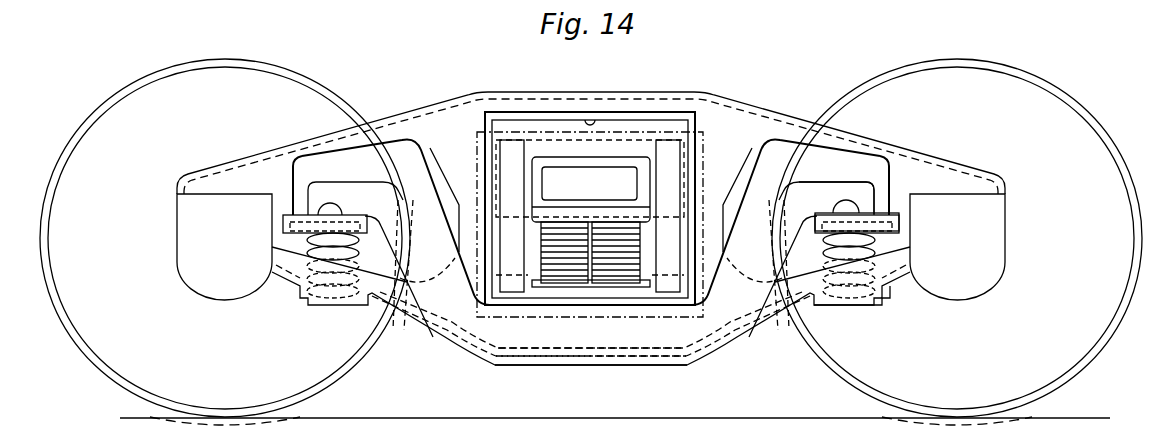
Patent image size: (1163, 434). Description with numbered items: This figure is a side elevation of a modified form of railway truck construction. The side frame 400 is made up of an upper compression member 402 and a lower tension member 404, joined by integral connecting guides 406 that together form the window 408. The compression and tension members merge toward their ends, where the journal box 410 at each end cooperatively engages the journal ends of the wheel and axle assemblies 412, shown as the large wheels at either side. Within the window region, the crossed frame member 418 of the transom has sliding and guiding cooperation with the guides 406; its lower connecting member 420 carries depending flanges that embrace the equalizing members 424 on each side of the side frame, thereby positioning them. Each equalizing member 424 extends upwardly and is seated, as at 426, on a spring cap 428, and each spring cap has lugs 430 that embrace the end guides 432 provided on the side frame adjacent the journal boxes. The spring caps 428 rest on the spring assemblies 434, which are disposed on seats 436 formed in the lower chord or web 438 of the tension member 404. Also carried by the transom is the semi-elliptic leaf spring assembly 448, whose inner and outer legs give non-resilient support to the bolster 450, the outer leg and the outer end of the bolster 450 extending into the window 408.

The side frame 400 is at (412, 120).
The compression member 402 is at (468, 103).
The tension member 404 is at (400, 323).
The connecting guides 406 is at (463, 208).
The window 408 is at (592, 122).
The journal box 410 is at (178, 228).
The wheel and axle assemblies 412 is at (118, 108).
The crossed frame member 418 is at (673, 143).
The lower connecting member 420 is at (542, 308).
The equalizing members 424 is at (646, 342).
The seat 426 is at (847, 210).
The spring caps 428 is at (887, 203).
The lugs 430 is at (899, 220).
The end guides 432 is at (290, 190).
The spring assemblies 434 is at (336, 250).
The seats 436 is at (850, 307).
The lower chord 438 is at (798, 328).
The semi-elliptic leaf spring assembly 448 is at (618, 263).
The bolster 450 is at (560, 160).